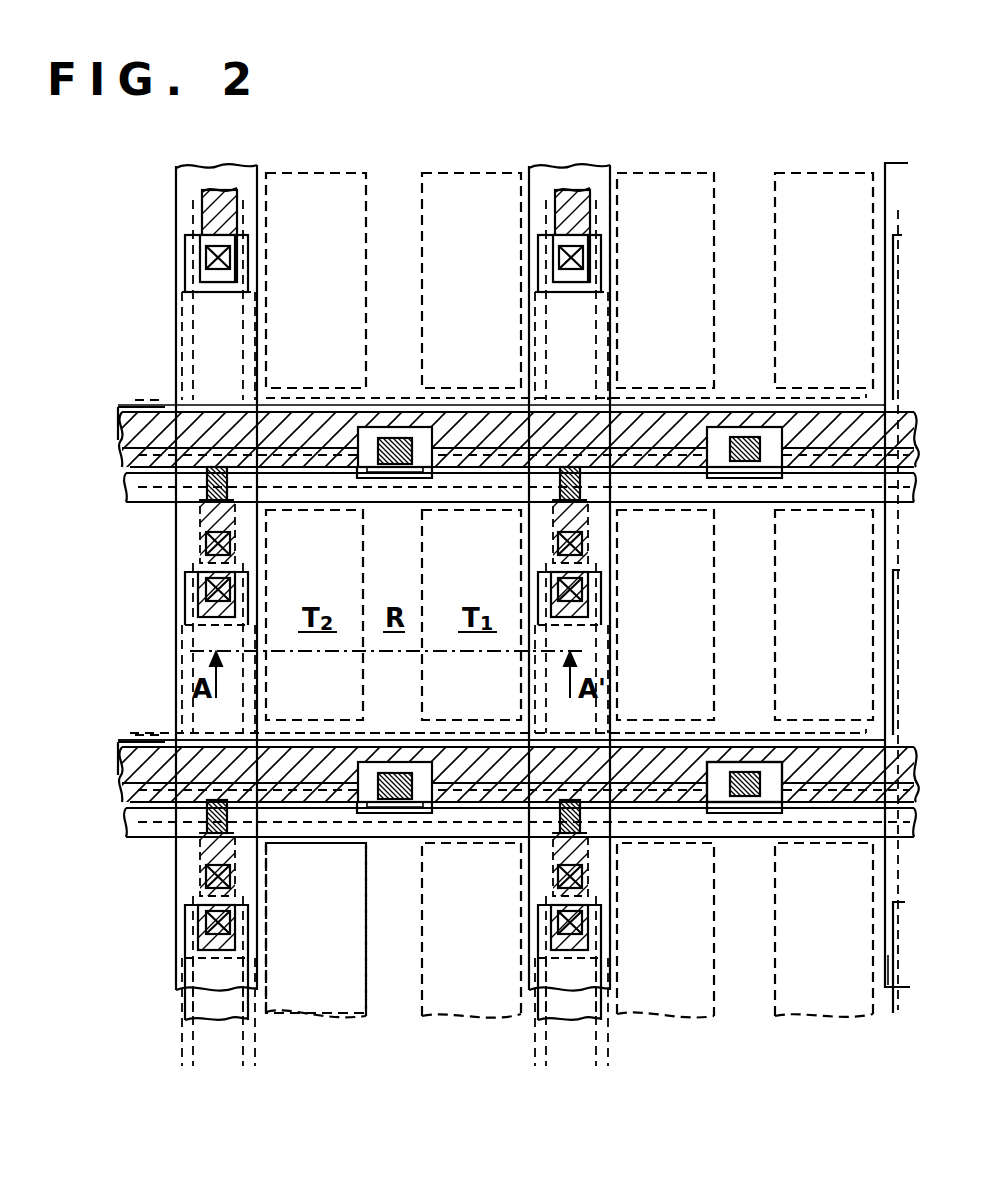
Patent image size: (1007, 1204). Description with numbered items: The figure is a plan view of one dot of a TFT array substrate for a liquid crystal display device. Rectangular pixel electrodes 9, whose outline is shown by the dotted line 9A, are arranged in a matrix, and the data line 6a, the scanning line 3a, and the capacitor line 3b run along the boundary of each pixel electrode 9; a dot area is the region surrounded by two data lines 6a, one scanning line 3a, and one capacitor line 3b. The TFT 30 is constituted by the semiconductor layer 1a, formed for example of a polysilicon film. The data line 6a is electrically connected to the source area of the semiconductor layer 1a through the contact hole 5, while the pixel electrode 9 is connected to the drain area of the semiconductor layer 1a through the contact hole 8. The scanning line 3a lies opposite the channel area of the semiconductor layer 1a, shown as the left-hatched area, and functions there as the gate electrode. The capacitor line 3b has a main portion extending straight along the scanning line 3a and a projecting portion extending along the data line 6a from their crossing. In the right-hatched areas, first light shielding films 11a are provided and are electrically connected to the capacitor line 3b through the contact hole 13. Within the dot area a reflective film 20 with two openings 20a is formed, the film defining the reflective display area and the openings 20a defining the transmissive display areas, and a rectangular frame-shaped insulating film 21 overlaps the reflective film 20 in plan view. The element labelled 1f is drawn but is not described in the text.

The semiconductor layer 1a is at (588, 822).
The drain electrode 1f is at (180, 632).
The scanning line 3a is at (398, 836).
The capacitor line 3b is at (742, 737).
The contact hole 5 is at (588, 878).
The data line 6a is at (605, 590).
The contact hole 8 is at (745, 806).
The pixel electrode 9 is at (410, 584).
The dotted line 9A is at (816, 492).
The first light shielding film 11a is at (594, 518).
The contact hole 13 is at (205, 590).
The reflective film 20 is at (263, 530).
The opening 20a is at (362, 554).
The insulating film 21 is at (262, 702).
The TFT 30 is at (264, 892).